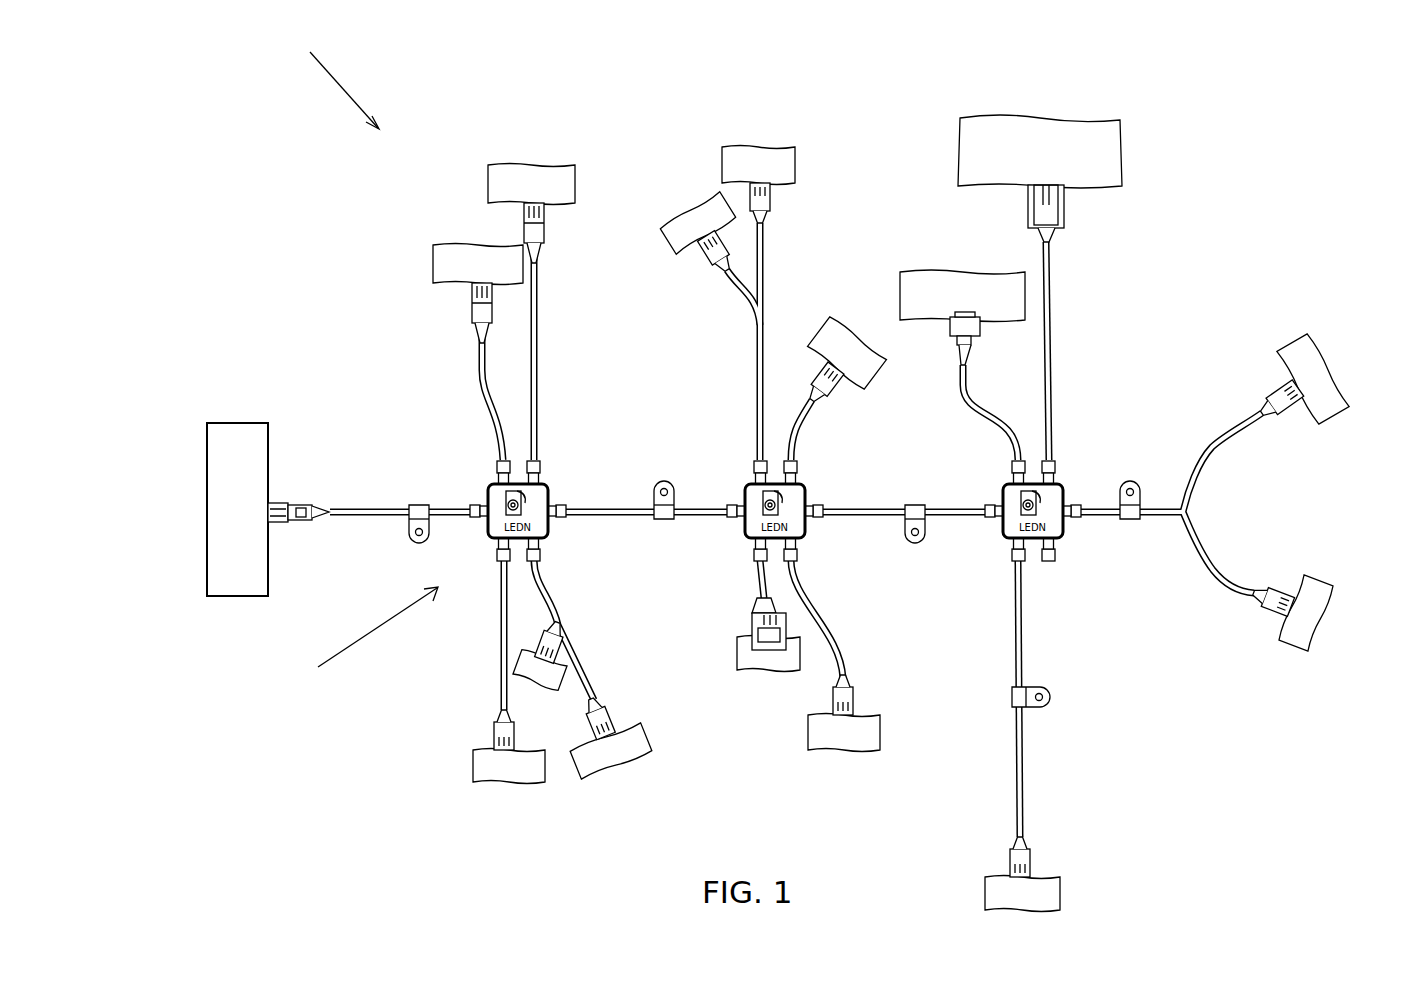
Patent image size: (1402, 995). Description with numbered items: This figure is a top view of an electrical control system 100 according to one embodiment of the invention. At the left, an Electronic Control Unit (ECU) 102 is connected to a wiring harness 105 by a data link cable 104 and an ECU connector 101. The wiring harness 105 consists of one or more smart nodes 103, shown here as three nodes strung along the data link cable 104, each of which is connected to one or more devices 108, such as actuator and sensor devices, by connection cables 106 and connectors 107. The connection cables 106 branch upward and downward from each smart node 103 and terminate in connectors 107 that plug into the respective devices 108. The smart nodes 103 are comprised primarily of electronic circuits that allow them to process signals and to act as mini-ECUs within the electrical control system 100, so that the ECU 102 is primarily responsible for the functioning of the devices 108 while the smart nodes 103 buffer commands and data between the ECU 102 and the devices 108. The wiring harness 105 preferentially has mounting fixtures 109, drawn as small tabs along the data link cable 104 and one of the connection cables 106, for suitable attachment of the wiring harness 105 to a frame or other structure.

The electrical control system 100 is at (328, 81).
The ECU connector 101 is at (293, 503).
The Electronic Control Unit 102 is at (232, 423).
The smart node 103 is at (487, 488).
The data link cable 104 is at (355, 505).
The wiring harness 105 is at (356, 641).
The connection cable 106 is at (482, 390).
The connector 107 is at (523, 226).
The device 108 is at (490, 180).
The mounting fixture 109 is at (410, 532).